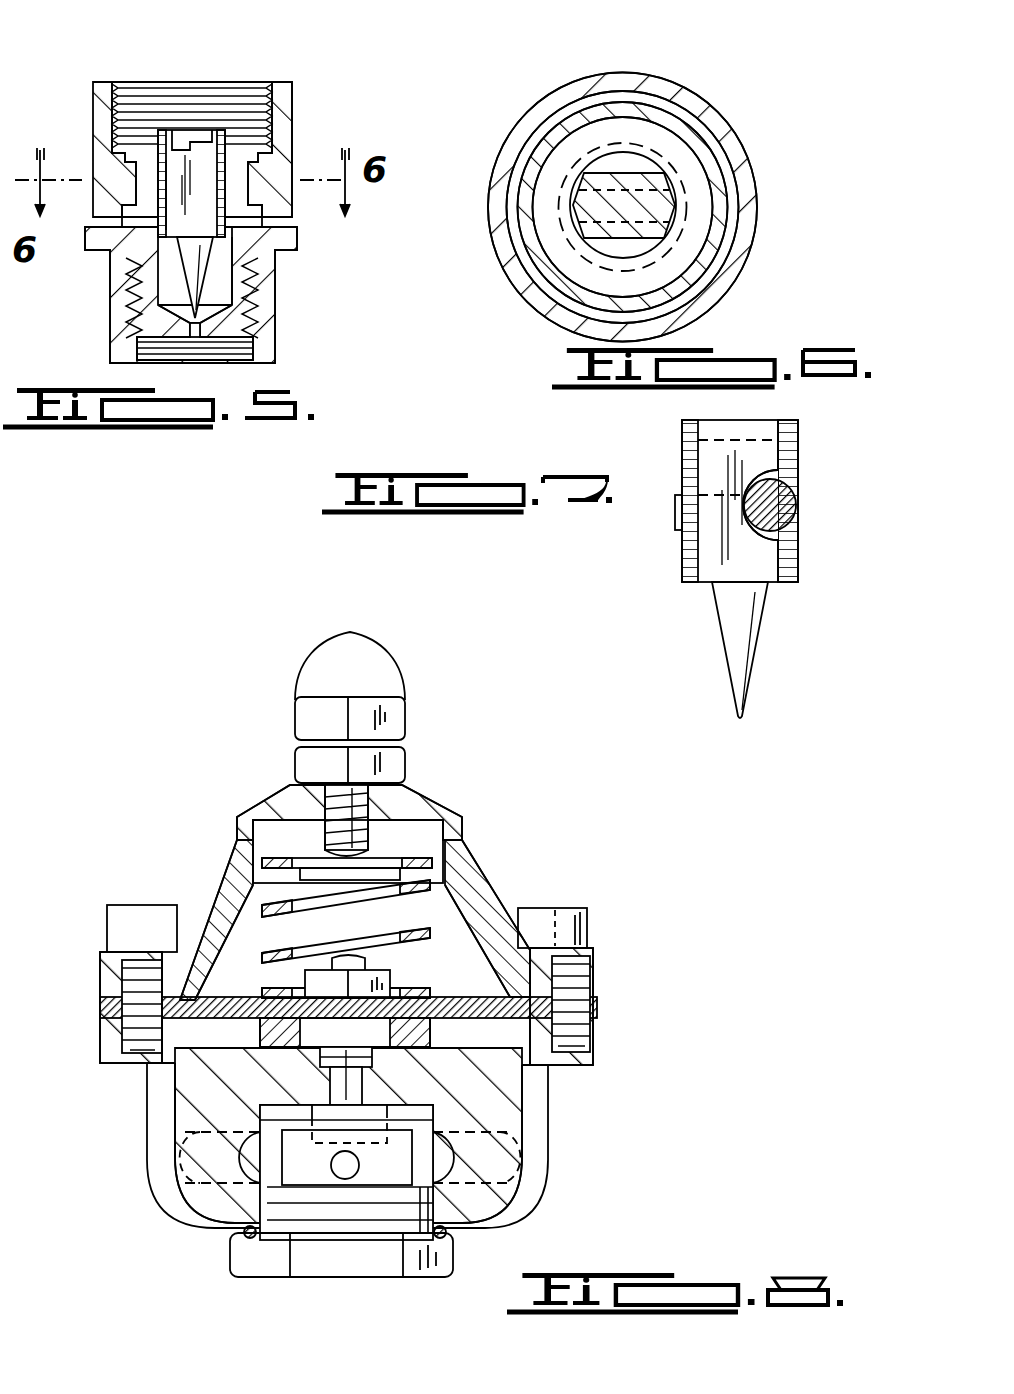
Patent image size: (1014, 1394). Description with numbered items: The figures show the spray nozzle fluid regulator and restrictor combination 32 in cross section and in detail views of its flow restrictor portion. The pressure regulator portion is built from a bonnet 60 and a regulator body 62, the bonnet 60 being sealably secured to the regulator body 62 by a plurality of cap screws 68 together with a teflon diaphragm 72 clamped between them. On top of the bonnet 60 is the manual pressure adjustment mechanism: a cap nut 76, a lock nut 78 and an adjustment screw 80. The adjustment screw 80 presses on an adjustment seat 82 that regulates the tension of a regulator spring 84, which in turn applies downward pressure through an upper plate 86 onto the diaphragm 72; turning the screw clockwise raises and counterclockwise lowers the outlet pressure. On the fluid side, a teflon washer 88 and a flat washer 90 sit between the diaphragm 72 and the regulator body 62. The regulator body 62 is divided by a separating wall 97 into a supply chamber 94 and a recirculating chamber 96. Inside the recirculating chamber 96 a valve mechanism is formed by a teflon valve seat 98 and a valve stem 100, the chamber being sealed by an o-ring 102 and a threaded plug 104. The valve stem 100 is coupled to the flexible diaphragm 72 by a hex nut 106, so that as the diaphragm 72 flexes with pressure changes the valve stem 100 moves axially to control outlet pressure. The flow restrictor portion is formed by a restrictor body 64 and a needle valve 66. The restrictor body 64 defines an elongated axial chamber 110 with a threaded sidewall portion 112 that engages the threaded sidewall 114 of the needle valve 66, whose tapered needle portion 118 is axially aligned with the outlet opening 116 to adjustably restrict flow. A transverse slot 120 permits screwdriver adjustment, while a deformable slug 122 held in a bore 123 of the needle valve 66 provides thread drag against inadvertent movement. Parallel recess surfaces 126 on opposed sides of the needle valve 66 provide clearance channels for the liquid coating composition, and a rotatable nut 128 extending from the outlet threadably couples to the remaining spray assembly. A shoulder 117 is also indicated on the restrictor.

In FIG. 8, the fluid regulator and restrictor combination 32 is at (143, 1267).
In FIG. 8, the bonnet 60 is at (238, 830).
In FIG. 8, the regulator body 62 is at (535, 1130).
In FIG. 5, the restrictor body 64 is at (282, 238).
In FIG. 5, the needle valve 66 is at (180, 180).
In FIG. 6, the needle valve 66 is at (650, 205).
In FIG. 7, the needle valve 66 is at (795, 600).
In FIG. 8, the cap screws 68 is at (575, 925).
In FIG. 8, the teflon diaphragm 72 is at (522, 1003).
In FIG. 8, the cap nut 76 is at (392, 718).
In FIG. 8, the lock nut 78 is at (392, 762).
In FIG. 8, the adjustment screw 80 is at (352, 830).
In FIG. 8, the adjustment seat 82 is at (445, 845).
In FIG. 8, the regulator spring 84 is at (430, 892).
In FIG. 8, the upper plate 86 is at (425, 1012).
In FIG. 8, the teflon washer 88 is at (320, 1050).
In FIG. 8, the flat washer 90 is at (340, 1085).
In FIG. 8, the supply chamber 94 is at (485, 1040).
In FIG. 8, the recirculating chamber 96 is at (385, 1168).
In FIG. 8, the separating wall 97 is at (505, 1085).
In FIG. 8, the teflon valve seat 98 is at (300, 1150).
In FIG. 8, the valve stem 100 is at (282, 1132).
In FIG. 8, the o-ring 102 is at (245, 1235).
In FIG. 8, the threaded plug 104 is at (300, 1272).
In FIG. 8, the hex nut 106 is at (315, 984).
In FIG. 5, the axial chamber 110 is at (215, 277).
In FIG. 6, the threaded sidewall portion 112 is at (652, 160).
In FIG. 7, the threaded sidewall 114 is at (790, 460).
In FIG. 5, the outlet opening 116 is at (195, 330).
In FIG. 5, the shoulder 117 is at (292, 128).
In FIG. 5, the tapered needle portion 118 is at (185, 272).
In FIG. 7, the tapered needle portion 118 is at (740, 665).
In FIG. 5, the transverse slot 120 is at (196, 145).
In FIG. 7, the transverse slot 120 is at (718, 432).
In FIG. 7, the deformable slug 122 is at (790, 515).
In FIG. 7, the bore 123 is at (750, 512).
In FIG. 5, the recess surfaces 126 is at (172, 178).
In FIG. 6, the recess surfaces 126 is at (660, 240).
In FIG. 5, the rotatable nut 128 is at (292, 88).